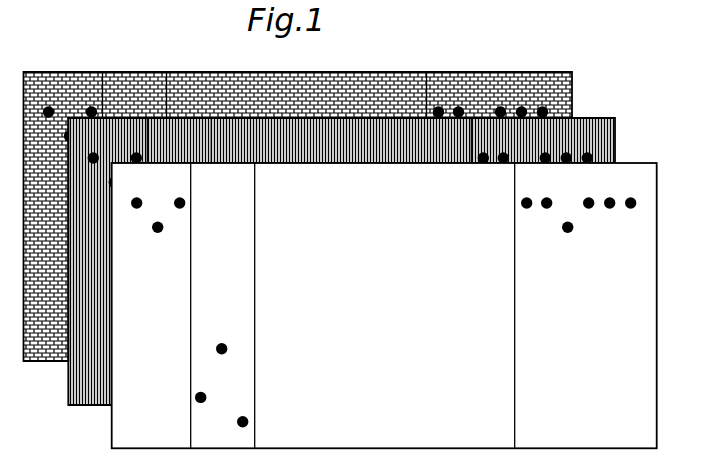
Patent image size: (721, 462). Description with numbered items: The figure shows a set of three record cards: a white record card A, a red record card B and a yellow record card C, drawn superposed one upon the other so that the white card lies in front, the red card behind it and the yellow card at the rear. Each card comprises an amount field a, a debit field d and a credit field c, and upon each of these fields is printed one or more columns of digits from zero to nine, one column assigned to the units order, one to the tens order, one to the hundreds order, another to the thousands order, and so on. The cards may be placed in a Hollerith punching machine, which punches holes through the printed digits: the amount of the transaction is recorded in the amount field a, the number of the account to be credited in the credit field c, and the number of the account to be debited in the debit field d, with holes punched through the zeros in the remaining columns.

The white record card A is at (384, 305).
The red record card B is at (341, 261).
The yellow record card C is at (298, 216).
The amount field a is at (573, 92).
The credit field c is at (150, 112).
The debit field d is at (58, 80).